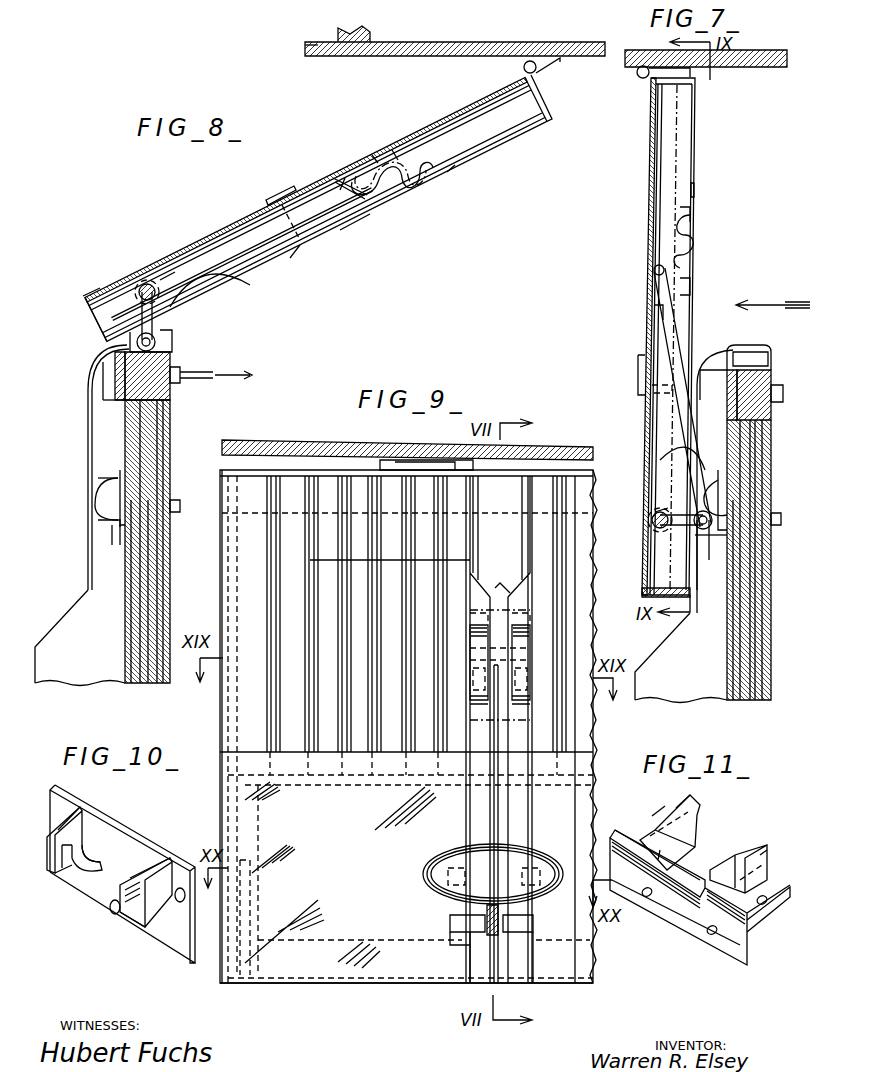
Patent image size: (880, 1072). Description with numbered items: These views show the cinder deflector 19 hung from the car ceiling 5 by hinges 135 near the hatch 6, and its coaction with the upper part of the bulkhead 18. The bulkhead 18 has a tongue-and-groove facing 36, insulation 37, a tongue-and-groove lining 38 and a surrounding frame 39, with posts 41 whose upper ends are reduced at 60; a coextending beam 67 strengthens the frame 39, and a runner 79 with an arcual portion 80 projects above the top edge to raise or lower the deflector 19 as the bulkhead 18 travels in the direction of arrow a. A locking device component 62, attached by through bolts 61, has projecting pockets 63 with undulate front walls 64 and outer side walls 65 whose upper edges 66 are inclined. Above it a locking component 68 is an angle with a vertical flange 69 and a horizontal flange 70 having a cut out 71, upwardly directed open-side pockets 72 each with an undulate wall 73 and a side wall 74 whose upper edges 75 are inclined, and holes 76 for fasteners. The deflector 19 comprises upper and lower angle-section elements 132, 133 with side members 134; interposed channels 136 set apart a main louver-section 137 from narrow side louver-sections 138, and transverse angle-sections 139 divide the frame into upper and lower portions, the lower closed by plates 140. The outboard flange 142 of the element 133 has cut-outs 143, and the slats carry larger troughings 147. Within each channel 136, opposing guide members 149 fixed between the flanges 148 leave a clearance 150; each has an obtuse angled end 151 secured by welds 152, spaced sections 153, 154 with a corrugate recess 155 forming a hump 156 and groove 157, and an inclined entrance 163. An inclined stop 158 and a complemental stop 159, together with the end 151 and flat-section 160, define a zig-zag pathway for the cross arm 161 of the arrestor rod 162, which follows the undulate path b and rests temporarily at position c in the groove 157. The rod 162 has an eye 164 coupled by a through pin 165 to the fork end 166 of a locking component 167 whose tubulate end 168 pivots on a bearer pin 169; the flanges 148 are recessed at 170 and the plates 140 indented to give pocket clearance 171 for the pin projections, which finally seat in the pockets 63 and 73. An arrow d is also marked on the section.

In FIG. 8, the car ceiling 5 is at (440, 42).
In FIG. 7, the car ceiling 5 is at (777, 68).
In FIG. 9, the car ceiling 5 is at (288, 440).
In FIG. 8, the hatch 6 is at (330, 57).
In FIG. 8, the bulkhead 18 is at (180, 596).
In FIG. 7, the bulkhead 18 is at (778, 680).
In FIG. 8, the cinder deflector 19 is at (345, 265).
In FIG. 7, the cinder deflector 19 is at (708, 95).
In FIG. 9, the cinder deflector 19 is at (212, 760).
In FIG. 8, the tongue-and-groove facing 36 is at (163, 600).
In FIG. 7, the tongue-and-groove facing 36 is at (762, 640).
In FIG. 8, the insulation 37 is at (150, 643).
In FIG. 7, the insulation 37 is at (752, 667).
In FIG. 8, the tongue-and-groove lining 38 is at (128, 628).
In FIG. 7, the tongue-and-groove lining 38 is at (730, 668).
In FIG. 8, the surrounding frame 39 is at (170, 456).
In FIG. 7, the surrounding frame 39 is at (771, 458).
In FIG. 8, the posts 41 is at (92, 677).
In FIG. 7, the posts 41 is at (690, 702).
In FIG. 8, the reduced upper ends of posts 60 is at (88, 598).
In FIG. 7, the reduced upper ends of posts 60 is at (678, 628).
In FIG. 8, the through bolts 61 is at (185, 506).
In FIG. 8, the locking device component 62 is at (112, 545).
In FIG. 7, the locking device component 62 is at (780, 520).
In FIG. 10, the locking device component 62 is at (90, 795).
In FIG. 8, the projecting pockets 63 is at (120, 480).
In FIG. 7, the projecting pockets 63 is at (727, 478).
In FIG. 10, the projecting pockets 63 is at (150, 880).
In FIG. 8, the undulate front walls 64 is at (95, 505).
In FIG. 7, the undulate front walls 64 is at (672, 515).
In FIG. 10, the undulate front walls 64 is at (110, 910).
In FIG. 8, the outer side walls 65 is at (100, 523).
In FIG. 10, the outer side walls 65 is at (140, 920).
In FIG. 8, the upper edges 66 is at (95, 475).
In FIG. 10, the upper edges 66 is at (158, 862).
In FIG. 8, the coextending beam 67 is at (168, 398).
In FIG. 7, the coextending beam 67 is at (770, 396).
In FIG. 8, the locking device components 68 is at (118, 372).
In FIG. 7, the locking device components 68 is at (726, 390).
In FIG. 11, the locking device components 68 is at (705, 805).
In FIG. 8, the vertical flange 69 is at (120, 400).
In FIG. 7, the vertical flange 69 is at (726, 415).
In FIG. 11, the vertical flange 69 is at (690, 930).
In FIG. 11, the horizontal flange 70 is at (772, 912).
In FIG. 7, the intermediate cut out 71 is at (726, 375).
In FIG. 11, the intermediate cut out 71 is at (688, 858).
In FIG. 7, the open-side pockets 72 is at (772, 345).
In FIG. 11, the open-side pockets 72 is at (738, 855).
In FIG. 8, the undulate wall 73 is at (126, 345).
In FIG. 7, the undulate wall 73 is at (765, 345).
In FIG. 11, the undulate wall 73 is at (767, 852).
In FIG. 7, the side wall 74 is at (768, 355).
In FIG. 9, the side wall 74 is at (602, 821).
In FIG. 11, the side wall 74 is at (760, 875).
In FIG. 7, the upper edges 75 is at (745, 345).
In FIG. 11, the upper edges 75 is at (676, 808).
In FIG. 11, the holes 76 is at (765, 905).
In FIG. 8, the runner 79 is at (88, 445).
In FIG. 7, the runner 79 is at (697, 608).
In FIG. 8, the arcual portion 80 is at (98, 349).
In FIG. 7, the arcual portion 80 is at (715, 350).
In FIG. 8, the upper angle-section element 132 is at (503, 92).
In FIG. 7, the upper angle-section element 132 is at (651, 104).
In FIG. 9, the upper angle-section element 132 is at (385, 554).
In FIG. 8, the lower angle-section element 133 is at (118, 282).
In FIG. 7, the lower angle-section element 133 is at (642, 588).
In FIG. 9, the lower angle-section element 133 is at (406, 952).
In FIG. 8, the side members 134 is at (222, 536).
In FIG. 9, the side members 134 is at (228, 540).
In FIG. 8, the hinges 135 is at (542, 80).
In FIG. 7, the hinges 135 is at (638, 76).
In FIG. 9, the hinges 135 is at (415, 460).
In FIG. 8, the interposed channels 136 is at (462, 122).
In FIG. 7, the interposed channels 136 is at (658, 200).
In FIG. 9, the interposed channels 136 is at (525, 546).
In FIG. 9, the main louver-section 137 is at (575, 572).
In FIG. 9, the side louver-sections 138 is at (400, 688).
In FIG. 8, the intermediate transverse angle-sections 139 is at (268, 206).
In FIG. 7, the intermediate transverse angle-sections 139 is at (638, 378).
In FIG. 9, the intermediate transverse angle-sections 139 is at (357, 785).
In FIG. 8, the coplanar plates 140 is at (218, 275).
In FIG. 7, the coplanar plates 140 is at (686, 580).
In FIG. 9, the coplanar plates 140 is at (302, 878).
In FIG. 8, the outboard flange 142 is at (85, 318).
In FIG. 7, the outboard flange 142 is at (648, 600).
In FIG. 9, the outboard flange 142 is at (357, 985).
In FIG. 9, the spaced cut-outs 143 is at (420, 603).
In FIG. 9, the larger troughings 147 is at (440, 565).
In FIG. 8, the flanges 148 is at (505, 130).
In FIG. 7, the flanges 148 is at (668, 142).
In FIG. 9, the flanges 148 is at (530, 506).
In FIG. 8, the opposing members 149 is at (460, 166).
In FIG. 7, the opposing members 149 is at (676, 185).
In FIG. 9, the opposing members 149 is at (525, 688).
In FIG. 9, the intervening clearance 150 is at (515, 605).
In FIG. 8, the obtuse angled end 151 is at (350, 230).
In FIG. 7, the obtuse angled end 151 is at (690, 300).
In FIG. 9, the obtuse angled end 151 is at (530, 705).
In FIG. 8, the welds 152 is at (350, 180).
In FIG. 7, the welds 152 is at (655, 312).
In FIG. 9, the welds 152 is at (490, 722).
In FIG. 8, the spaced section 153 is at (404, 208).
In FIG. 7, the spaced section 153 is at (764, 258).
In FIG. 9, the spaced section 153 is at (525, 672).
In FIG. 8, the spaced section 154 is at (430, 186).
In FIG. 7, the spaced section 154 is at (691, 203).
In FIG. 9, the spaced section 154 is at (478, 630).
In FIG. 8, the corrugate recess 155 is at (418, 196).
In FIG. 7, the corrugate recess 155 is at (688, 236).
In FIG. 9, the corrugate recess 155 is at (478, 650).
In FIG. 8, the hump 156 is at (396, 150).
In FIG. 7, the hump 156 is at (668, 228).
In FIG. 8, the groove 157 is at (445, 160).
In FIG. 7, the groove 157 is at (690, 216).
In FIG. 8, the inclined stop 158 is at (380, 206).
In FIG. 7, the inclined stop 158 is at (690, 285).
In FIG. 9, the inclined stop 158 is at (455, 700).
In FIG. 8, the complemental stop 159 is at (368, 168).
In FIG. 7, the complemental stop 159 is at (668, 255).
In FIG. 9, the complemental stop 159 is at (470, 660).
In FIG. 8, the flat-section 160 is at (378, 150).
In FIG. 7, the flat-section 160 is at (690, 262).
In FIG. 8, the cross arm 161 is at (358, 194).
In FIG. 7, the cross arm 161 is at (653, 270).
In FIG. 9, the cross arm 161 is at (505, 650).
In FIG. 8, the arrestor rod 162 is at (285, 262).
In FIG. 7, the arrestor rod 162 is at (666, 330).
In FIG. 9, the arrestor rod 162 is at (510, 738).
In FIG. 8, the inclined outer ends 163 is at (452, 168).
In FIG. 7, the inclined outer ends 163 is at (694, 190).
In FIG. 9, the inclined outer ends 163 is at (505, 590).
In FIG. 8, the eye 164 is at (158, 345).
In FIG. 7, the eye 164 is at (715, 525).
In FIG. 9, the eye 164 is at (496, 940).
In FIG. 8, the through pin 165 is at (160, 333).
In FIG. 7, the through pin 165 is at (700, 560).
In FIG. 9, the through pin 165 is at (468, 940).
In FIG. 8, the fork end 166 is at (100, 372).
In FIG. 7, the fork end 166 is at (715, 540).
In FIG. 9, the fork end 166 is at (533, 945).
In FIG. 8, the locking component 167 is at (138, 318).
In FIG. 7, the locking component 167 is at (672, 530).
In FIG. 9, the locking component 167 is at (470, 960).
In FIG. 8, the tubulate end 168 is at (147, 280).
In FIG. 7, the tubulate end 168 is at (650, 520).
In FIG. 8, the bearer pin 169 is at (165, 268).
In FIG. 7, the bearer pin 169 is at (655, 512).
In FIG. 9, the bearer pin 169 is at (540, 905).
In FIG. 8, the arcual recesses 170 is at (205, 285).
In FIG. 7, the arcual recesses 170 is at (660, 460).
In FIG. 9, the arcual recesses 170 is at (545, 842).
In FIG. 9, the opposing pocket clearance 171 is at (555, 860).
In FIG. 8, the arrow a is at (209, 405).
In FIG. 8, the dot-and-dash line b is at (408, 198).
In FIG. 7, the dot-and-dash indication c is at (690, 259).
In FIG. 7, the direction d is at (773, 294).